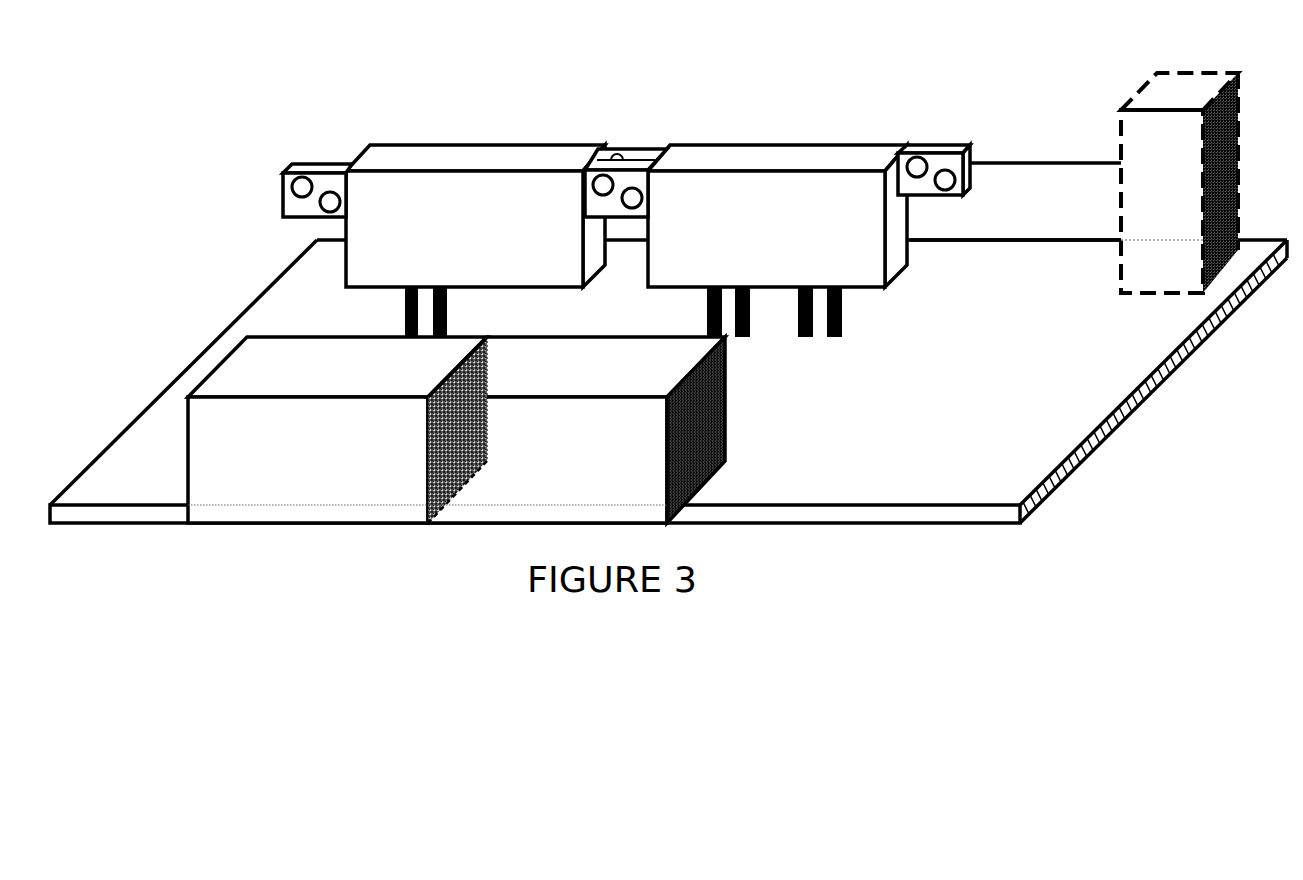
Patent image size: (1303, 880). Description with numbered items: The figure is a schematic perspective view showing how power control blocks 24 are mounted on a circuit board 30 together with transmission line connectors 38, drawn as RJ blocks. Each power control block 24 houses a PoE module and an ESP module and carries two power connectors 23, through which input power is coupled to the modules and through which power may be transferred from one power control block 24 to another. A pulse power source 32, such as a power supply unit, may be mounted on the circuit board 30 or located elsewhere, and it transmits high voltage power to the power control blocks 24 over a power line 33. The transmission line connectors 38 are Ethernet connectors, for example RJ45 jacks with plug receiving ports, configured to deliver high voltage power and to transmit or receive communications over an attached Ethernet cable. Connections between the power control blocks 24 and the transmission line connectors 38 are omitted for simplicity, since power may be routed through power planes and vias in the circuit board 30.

The power connector 23 is at (320, 165).
The power control block 24 is at (452, 143).
The circuit board 30 is at (668, 381).
The pulse power source 32 is at (1187, 73).
The power line 33 is at (1043, 163).
The transmission line connector 38 is at (335, 337).